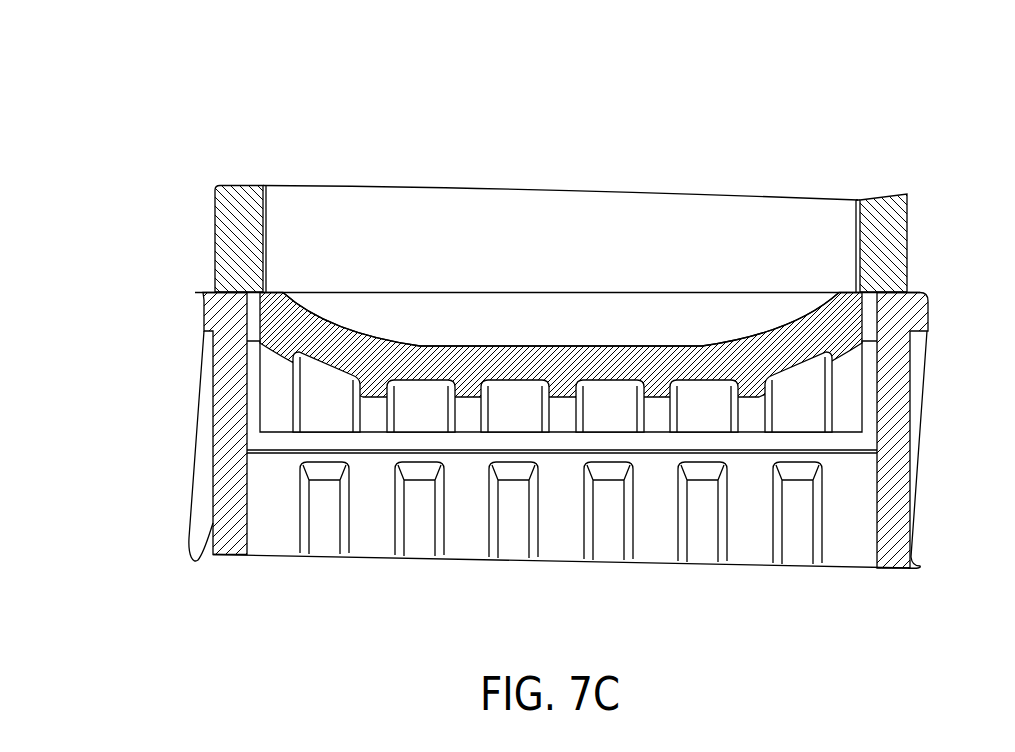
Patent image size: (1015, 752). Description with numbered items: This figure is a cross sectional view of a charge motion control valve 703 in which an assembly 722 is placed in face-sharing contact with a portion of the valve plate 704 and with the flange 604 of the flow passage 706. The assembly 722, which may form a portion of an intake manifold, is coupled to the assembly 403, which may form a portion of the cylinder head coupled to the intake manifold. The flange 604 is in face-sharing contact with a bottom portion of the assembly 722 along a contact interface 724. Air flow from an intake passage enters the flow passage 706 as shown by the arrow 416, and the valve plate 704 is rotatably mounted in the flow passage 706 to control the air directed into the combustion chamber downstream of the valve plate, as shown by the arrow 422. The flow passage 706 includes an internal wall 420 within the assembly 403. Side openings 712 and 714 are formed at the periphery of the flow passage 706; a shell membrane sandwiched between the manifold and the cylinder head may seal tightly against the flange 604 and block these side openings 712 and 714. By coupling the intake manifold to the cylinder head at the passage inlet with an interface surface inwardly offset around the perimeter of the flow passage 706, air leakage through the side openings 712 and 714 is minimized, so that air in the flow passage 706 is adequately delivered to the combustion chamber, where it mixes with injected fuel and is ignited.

The charge motion control valve 703 is at (118, 111).
The arrow 416 is at (596, 167).
The side opening 712 is at (267, 243).
The side opening 714 is at (880, 203).
The assembly 722 is at (897, 238).
The flange 604 is at (210, 293).
The flow passage 706 is at (503, 324).
The valve plate 704 is at (636, 347).
The assembly 403 is at (893, 522).
The contact interface 724 is at (218, 315).
The internal wall 420 is at (477, 537).
The arrow 422 is at (551, 593).